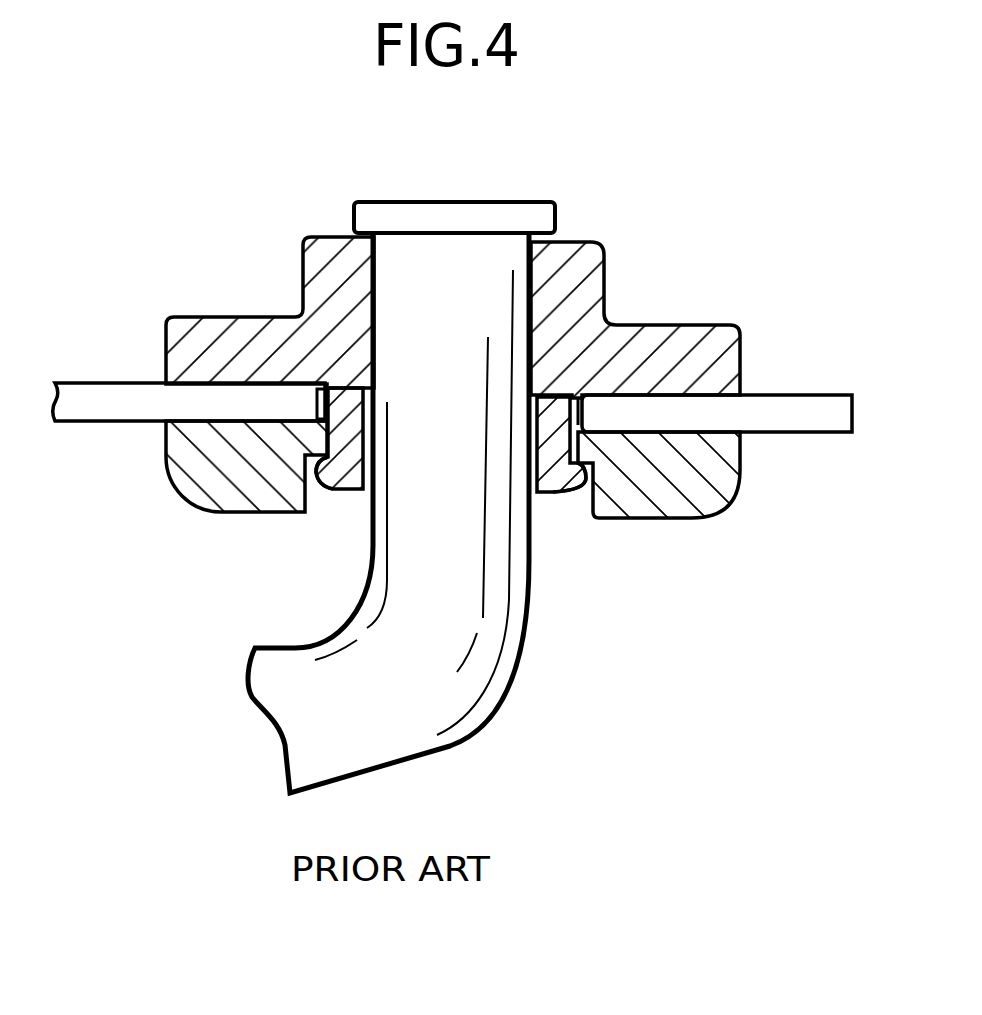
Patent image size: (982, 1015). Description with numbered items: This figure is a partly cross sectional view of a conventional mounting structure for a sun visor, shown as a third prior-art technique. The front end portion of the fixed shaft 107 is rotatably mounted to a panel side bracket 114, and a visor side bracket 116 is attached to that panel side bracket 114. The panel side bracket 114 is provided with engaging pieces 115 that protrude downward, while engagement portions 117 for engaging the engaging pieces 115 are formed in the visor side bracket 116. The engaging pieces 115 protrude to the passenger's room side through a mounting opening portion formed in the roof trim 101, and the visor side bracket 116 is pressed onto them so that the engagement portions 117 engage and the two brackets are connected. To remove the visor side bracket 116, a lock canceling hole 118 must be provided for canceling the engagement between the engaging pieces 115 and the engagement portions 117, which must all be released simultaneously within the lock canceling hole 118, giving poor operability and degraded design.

The roof trim 101 is at (813, 437).
The fixed shaft 107 is at (510, 683).
The panel side bracket 114 is at (604, 277).
The engaging piece 115 is at (347, 492).
The visor side bracket 116 is at (717, 493).
The engagement portion 117 is at (325, 503).
The lock canceling hole 118 is at (549, 512).